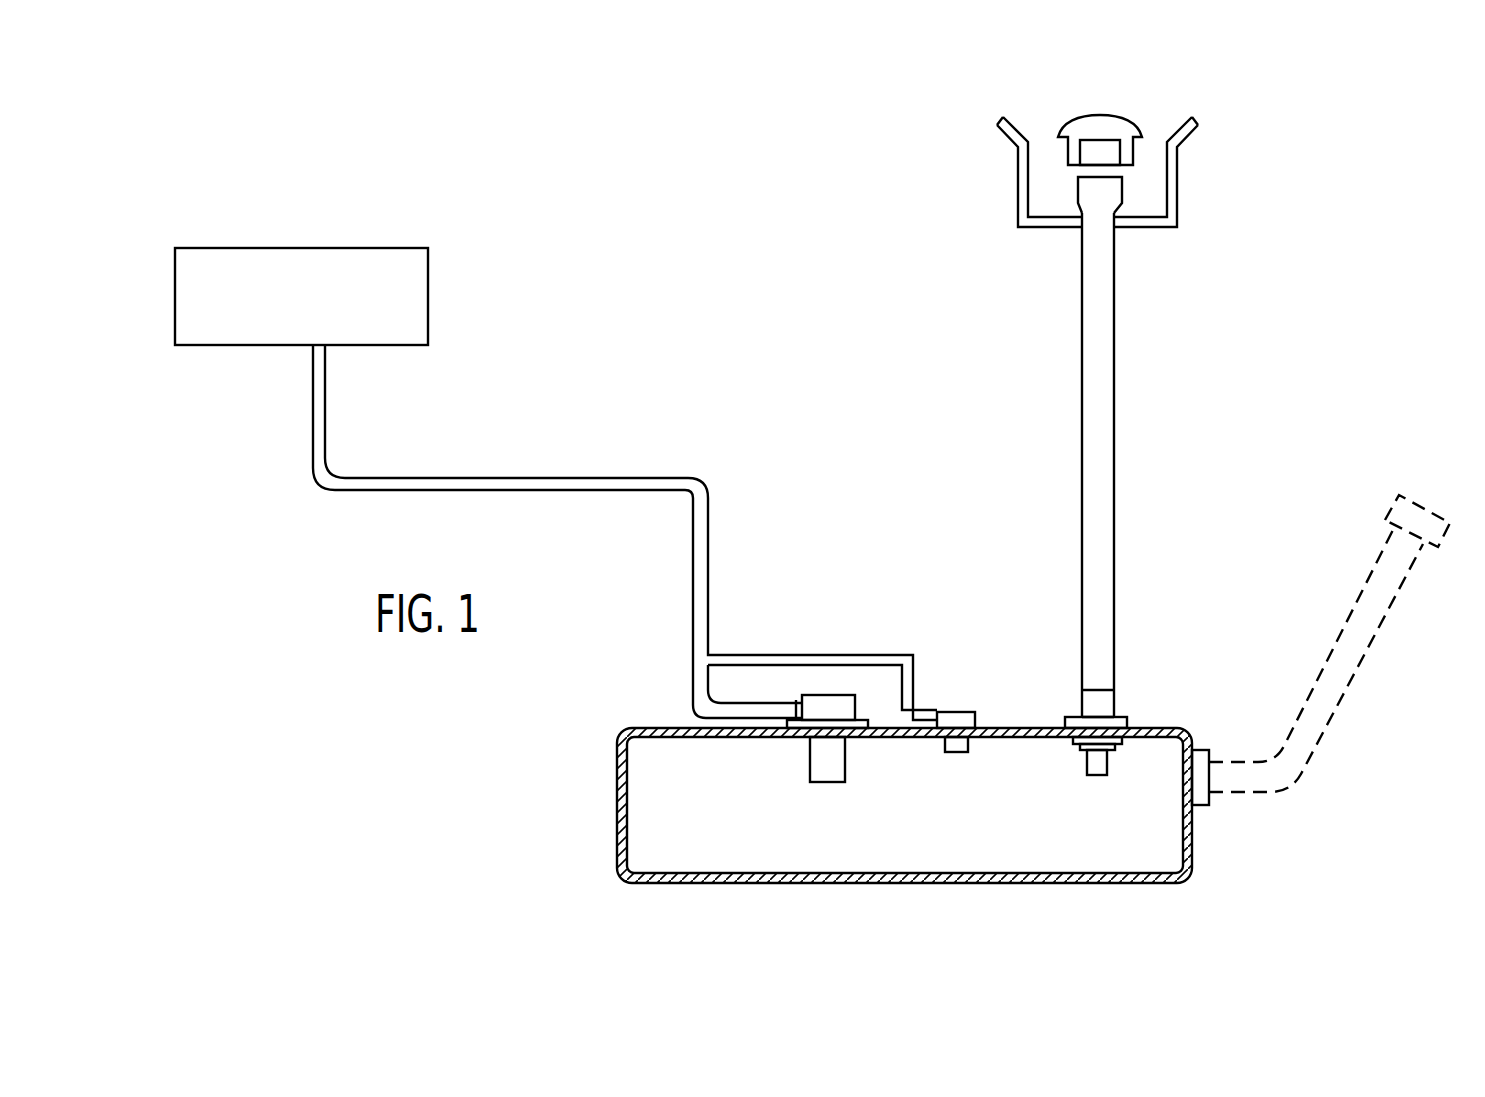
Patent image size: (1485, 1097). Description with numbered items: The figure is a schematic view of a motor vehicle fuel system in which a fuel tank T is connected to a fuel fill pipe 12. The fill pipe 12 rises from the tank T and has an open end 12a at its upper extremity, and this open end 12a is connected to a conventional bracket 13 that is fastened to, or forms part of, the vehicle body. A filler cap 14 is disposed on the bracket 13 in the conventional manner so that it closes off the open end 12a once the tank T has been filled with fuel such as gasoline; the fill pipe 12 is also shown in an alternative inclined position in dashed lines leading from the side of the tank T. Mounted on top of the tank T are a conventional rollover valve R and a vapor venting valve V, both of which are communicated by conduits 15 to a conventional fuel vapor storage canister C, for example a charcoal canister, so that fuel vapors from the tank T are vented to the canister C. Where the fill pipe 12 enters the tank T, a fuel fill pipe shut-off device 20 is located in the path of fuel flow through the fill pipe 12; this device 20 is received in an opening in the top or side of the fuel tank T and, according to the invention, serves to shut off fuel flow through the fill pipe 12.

The fuel tank T is at (645, 830).
The fuel vapor storage canister C is at (418, 288).
The conduits 15 is at (703, 613).
The vapor venting valve V is at (857, 707).
The rollover valve R is at (958, 712).
The fuel fill pipe 12 is at (1114, 305).
The open end 12a is at (1078, 181).
The filler cap 14 is at (1117, 125).
The bracket 13 is at (1178, 172).
The fuel fill pipe shut-off device 20 is at (1128, 709).